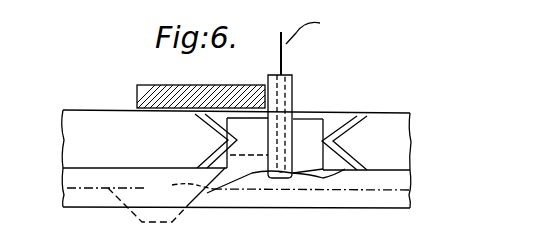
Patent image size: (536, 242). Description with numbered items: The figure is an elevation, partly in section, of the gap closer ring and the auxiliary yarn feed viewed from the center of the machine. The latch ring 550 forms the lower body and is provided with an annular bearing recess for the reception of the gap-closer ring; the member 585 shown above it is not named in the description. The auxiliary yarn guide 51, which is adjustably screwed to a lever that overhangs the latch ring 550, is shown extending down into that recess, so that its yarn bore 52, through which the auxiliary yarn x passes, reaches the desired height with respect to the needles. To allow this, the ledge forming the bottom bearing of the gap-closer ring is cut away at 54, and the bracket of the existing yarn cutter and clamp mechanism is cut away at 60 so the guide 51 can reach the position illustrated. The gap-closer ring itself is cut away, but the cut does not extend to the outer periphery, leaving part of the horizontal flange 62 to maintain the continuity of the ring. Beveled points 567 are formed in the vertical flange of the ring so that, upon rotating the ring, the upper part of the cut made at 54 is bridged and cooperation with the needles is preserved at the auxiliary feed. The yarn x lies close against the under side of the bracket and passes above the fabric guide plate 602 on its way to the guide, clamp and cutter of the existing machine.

The auxiliary yarn guide 51 is at (293, 80).
The yarn bore 52 is at (293, 99).
The cut-away in the ledge 54 is at (271, 180).
The cut-away in the bracket 60 is at (264, 86).
The horizontal flange 62 is at (322, 118).
The latch ring 550 is at (407, 177).
The beveled points 567 is at (220, 142).
The upper plate 585 is at (412, 123).
The fabric guide plate 602 is at (222, 84).